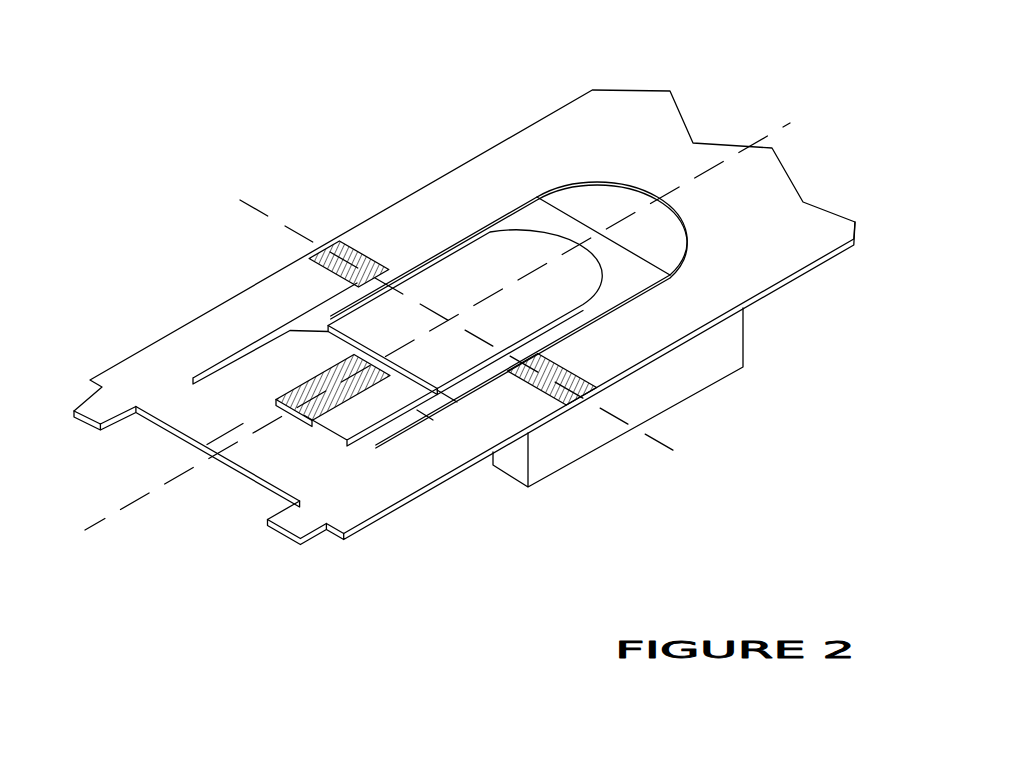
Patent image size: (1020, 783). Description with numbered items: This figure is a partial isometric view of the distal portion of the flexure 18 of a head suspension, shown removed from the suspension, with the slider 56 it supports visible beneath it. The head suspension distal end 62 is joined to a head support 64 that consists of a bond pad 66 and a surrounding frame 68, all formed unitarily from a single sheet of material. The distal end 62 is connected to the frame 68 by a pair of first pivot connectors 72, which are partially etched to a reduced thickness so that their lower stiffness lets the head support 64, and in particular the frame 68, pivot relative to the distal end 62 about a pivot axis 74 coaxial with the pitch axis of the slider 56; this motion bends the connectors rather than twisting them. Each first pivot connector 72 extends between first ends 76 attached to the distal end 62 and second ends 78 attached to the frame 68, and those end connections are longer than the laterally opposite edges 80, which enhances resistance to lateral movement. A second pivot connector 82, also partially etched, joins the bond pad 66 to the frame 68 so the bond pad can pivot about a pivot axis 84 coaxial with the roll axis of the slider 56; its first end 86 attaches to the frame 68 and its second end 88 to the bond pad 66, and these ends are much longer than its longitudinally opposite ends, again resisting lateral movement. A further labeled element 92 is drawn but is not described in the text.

The flexure 18 is at (636, 138).
The slider 56 is at (728, 340).
The head suspension distal end 62 is at (510, 172).
The head support 64 is at (318, 124).
The bond pad 66 is at (535, 242).
The frame 68 is at (182, 352).
The first pivot connectors 72 is at (366, 264).
The pivot axis 74 is at (252, 207).
The first ends 76 is at (358, 242).
The second ends 78 is at (340, 258).
The laterally opposite edges 80 is at (332, 248).
The second pivot connector 82 is at (341, 394).
The pivot axis 84 is at (790, 126).
The first end 86 is at (283, 398).
The second end 88 is at (325, 405).
The spring arm 92 is at (290, 405).